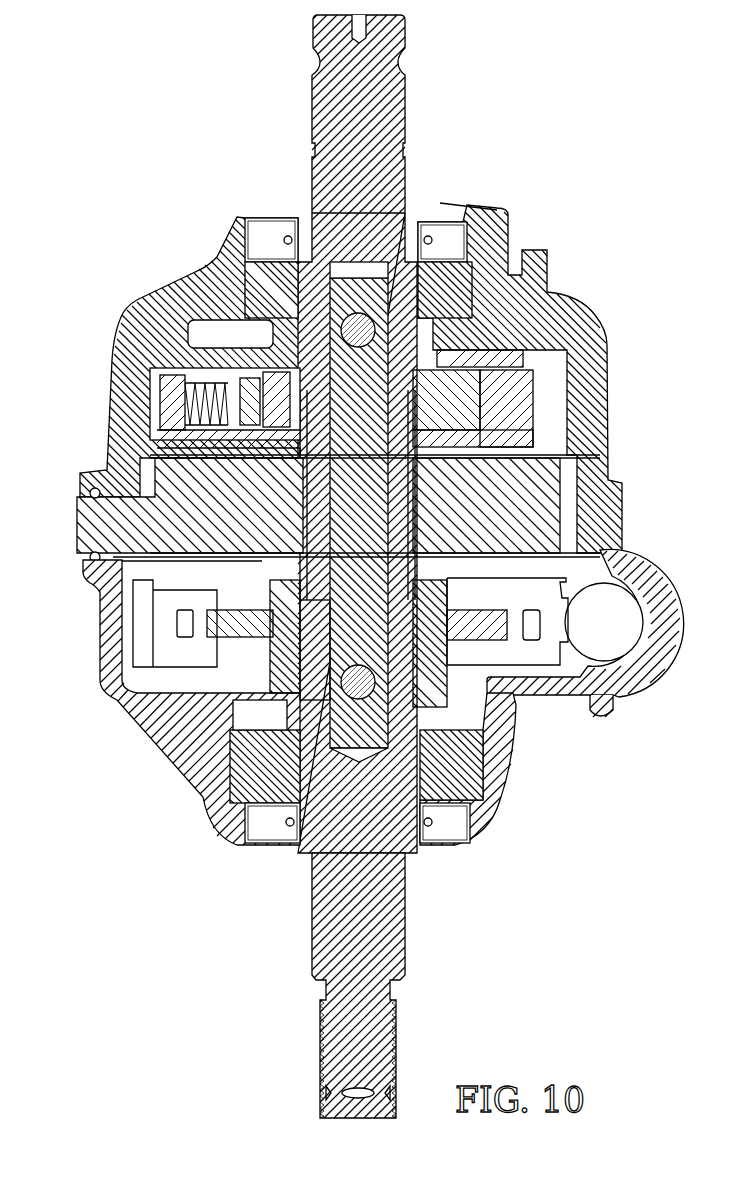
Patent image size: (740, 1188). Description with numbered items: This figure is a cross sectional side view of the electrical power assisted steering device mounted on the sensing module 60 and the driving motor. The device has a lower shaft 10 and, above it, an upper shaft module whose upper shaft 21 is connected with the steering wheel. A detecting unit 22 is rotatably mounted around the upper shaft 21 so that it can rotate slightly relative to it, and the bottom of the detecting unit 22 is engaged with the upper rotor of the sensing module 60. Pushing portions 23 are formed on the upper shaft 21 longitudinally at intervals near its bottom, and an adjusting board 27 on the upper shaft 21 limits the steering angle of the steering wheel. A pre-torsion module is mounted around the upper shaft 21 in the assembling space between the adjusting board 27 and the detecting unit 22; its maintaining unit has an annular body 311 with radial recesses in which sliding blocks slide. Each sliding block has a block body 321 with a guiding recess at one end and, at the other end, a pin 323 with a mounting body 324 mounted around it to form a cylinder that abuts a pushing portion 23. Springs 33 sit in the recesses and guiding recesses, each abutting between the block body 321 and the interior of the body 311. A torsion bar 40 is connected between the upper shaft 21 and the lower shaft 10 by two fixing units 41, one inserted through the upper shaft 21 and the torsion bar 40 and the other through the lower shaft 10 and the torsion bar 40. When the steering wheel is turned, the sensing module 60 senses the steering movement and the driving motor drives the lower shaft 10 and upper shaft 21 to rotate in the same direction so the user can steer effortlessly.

The lower shaft 10 is at (393, 908).
The upper shaft 21 is at (390, 108).
The detecting unit 22 is at (273, 460).
The pushing portions 23 is at (417, 420).
The adjusting board 27 is at (470, 357).
The springs 33 is at (187, 390).
The torsion bar 40 is at (330, 648).
The fixing units 41 is at (318, 658).
The sensing module 60 is at (537, 493).
The body 311 is at (160, 408).
The block body 321 is at (215, 355).
The pin 323 is at (268, 380).
The mounting body 324 is at (247, 413).